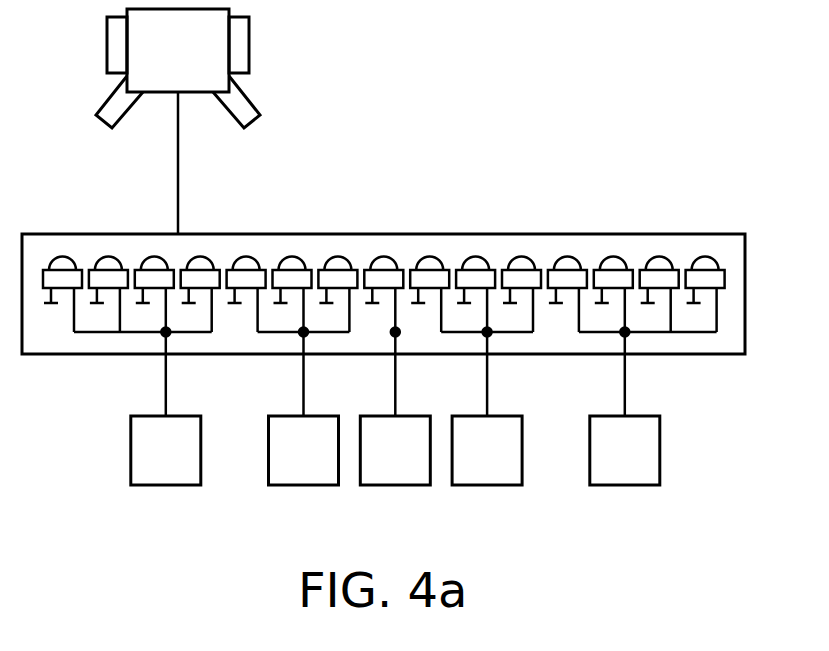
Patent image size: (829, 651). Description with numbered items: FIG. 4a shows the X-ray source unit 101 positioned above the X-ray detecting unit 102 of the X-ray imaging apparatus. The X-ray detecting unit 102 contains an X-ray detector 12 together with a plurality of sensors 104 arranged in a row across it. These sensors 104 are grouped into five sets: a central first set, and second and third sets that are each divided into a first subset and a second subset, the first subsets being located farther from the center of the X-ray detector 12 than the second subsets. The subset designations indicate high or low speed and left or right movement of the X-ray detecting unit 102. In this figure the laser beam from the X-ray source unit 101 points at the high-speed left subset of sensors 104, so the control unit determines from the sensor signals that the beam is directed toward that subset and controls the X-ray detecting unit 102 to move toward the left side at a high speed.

The X-ray source unit 101 is at (197, 61).
The X-ray detecting unit 102 is at (572, 234).
The sensors 104 is at (476, 257).
The X-ray detector 12 is at (656, 244).